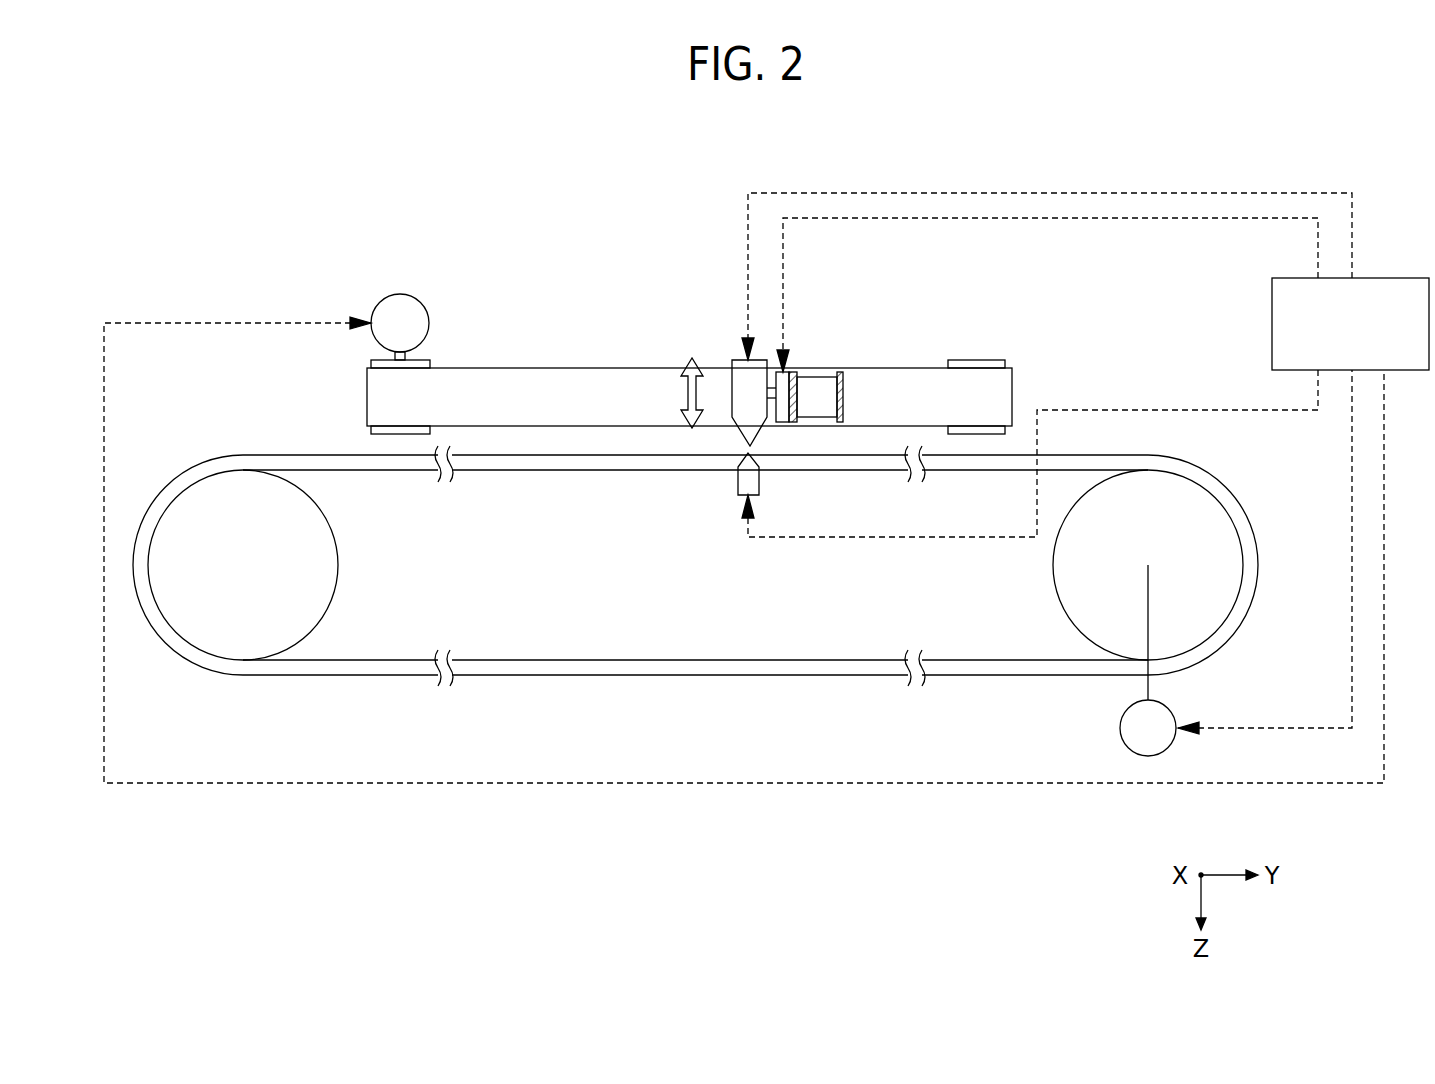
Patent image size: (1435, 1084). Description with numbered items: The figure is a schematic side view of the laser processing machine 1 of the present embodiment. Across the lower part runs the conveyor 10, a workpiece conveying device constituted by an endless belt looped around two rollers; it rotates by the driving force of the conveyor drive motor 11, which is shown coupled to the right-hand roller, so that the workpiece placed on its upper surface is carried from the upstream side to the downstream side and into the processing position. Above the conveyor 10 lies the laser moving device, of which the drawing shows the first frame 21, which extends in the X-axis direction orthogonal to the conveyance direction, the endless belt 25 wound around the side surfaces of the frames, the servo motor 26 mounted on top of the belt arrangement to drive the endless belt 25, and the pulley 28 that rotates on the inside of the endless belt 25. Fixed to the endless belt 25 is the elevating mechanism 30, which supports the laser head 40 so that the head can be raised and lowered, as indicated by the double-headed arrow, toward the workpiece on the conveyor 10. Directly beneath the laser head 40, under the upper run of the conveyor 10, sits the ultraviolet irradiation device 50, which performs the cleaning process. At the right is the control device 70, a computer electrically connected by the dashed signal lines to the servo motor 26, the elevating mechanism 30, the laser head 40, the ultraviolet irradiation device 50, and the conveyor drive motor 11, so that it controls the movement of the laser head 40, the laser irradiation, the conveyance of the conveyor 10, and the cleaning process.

The laser processing machine 1 is at (452, 219).
The conveyor 10 is at (637, 667).
The conveyor drive motor 11 is at (1120, 728).
The first frame 21 is at (822, 384).
The endless belt 25 is at (522, 380).
The servo motor 26 is at (400, 294).
The pulley 28 is at (972, 360).
The elevating mechanism 30 is at (785, 395).
The laser head 40 is at (738, 393).
The ultraviolet irradiation device 50 is at (738, 475).
The control device 70 is at (1384, 278).